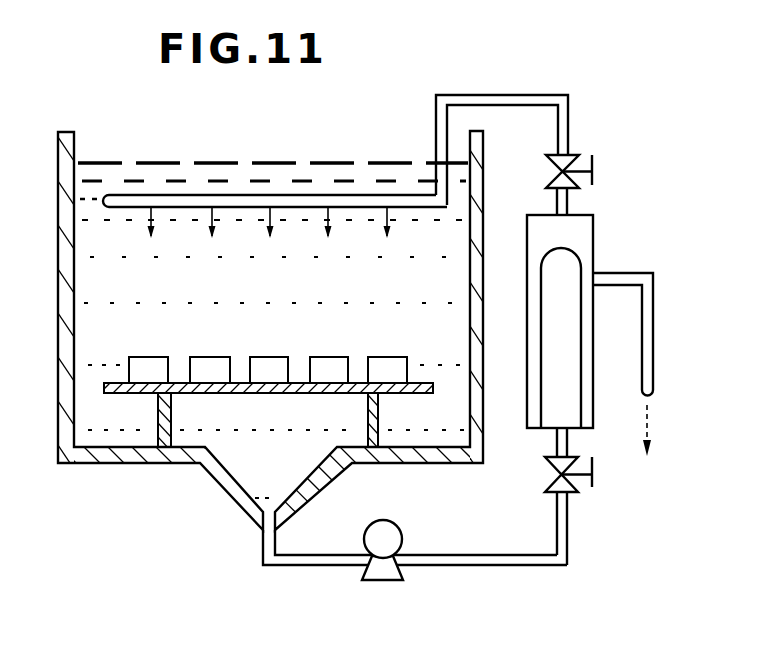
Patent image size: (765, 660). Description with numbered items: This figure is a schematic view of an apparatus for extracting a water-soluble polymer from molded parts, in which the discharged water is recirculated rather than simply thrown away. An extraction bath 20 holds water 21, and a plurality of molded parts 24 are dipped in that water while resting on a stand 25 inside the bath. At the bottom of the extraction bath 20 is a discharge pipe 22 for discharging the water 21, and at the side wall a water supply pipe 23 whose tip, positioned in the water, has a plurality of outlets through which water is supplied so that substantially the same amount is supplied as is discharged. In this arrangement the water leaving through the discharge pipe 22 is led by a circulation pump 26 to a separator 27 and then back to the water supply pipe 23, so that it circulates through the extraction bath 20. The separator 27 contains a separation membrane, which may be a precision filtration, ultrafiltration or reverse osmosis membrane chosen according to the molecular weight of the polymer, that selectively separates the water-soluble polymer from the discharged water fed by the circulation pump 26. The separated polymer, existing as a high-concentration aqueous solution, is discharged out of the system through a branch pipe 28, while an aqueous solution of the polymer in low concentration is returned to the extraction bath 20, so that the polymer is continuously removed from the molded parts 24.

The extraction bath 20 is at (68, 233).
The water 21 is at (80, 312).
The discharge pipe 22 is at (323, 566).
The water supply pipe 23 is at (518, 95).
The molded parts 24 is at (158, 360).
The stand 25 is at (162, 410).
The circulation pump 26 is at (392, 532).
The separator 27 is at (616, 259).
The branch pipe 28 is at (653, 340).